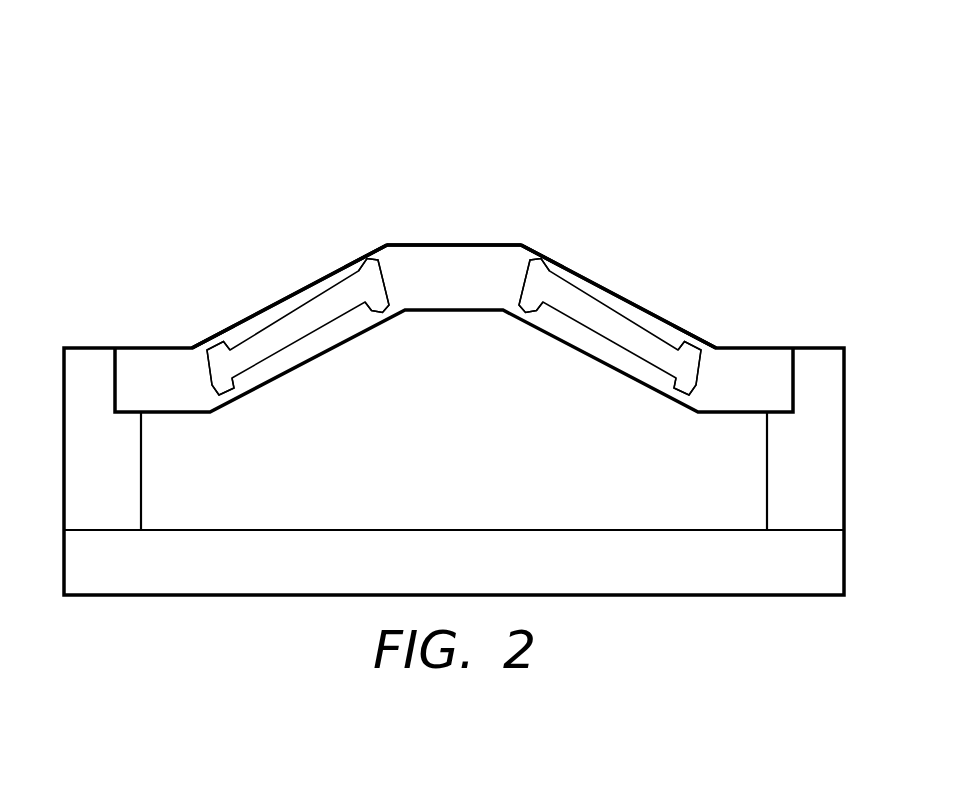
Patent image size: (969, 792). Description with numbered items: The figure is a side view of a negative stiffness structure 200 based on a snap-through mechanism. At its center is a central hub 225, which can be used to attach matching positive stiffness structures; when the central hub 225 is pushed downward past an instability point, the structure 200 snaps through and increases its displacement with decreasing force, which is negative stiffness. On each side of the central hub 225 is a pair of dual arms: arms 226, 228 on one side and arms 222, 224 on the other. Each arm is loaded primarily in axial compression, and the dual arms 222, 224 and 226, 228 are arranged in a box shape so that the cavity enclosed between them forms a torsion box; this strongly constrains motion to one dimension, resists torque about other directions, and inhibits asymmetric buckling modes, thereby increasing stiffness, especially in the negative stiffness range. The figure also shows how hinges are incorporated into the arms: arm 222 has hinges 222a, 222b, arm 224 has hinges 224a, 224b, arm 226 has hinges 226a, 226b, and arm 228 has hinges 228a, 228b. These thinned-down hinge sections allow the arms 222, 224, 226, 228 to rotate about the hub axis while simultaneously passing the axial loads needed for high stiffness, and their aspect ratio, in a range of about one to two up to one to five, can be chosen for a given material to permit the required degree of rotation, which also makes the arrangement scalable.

The negative stiffness structure 200 is at (310, 205).
The central hub 225 is at (451, 258).
The arm 226 is at (285, 299).
The hinge 226a is at (359, 258).
The hinge 226b is at (212, 340).
The arm 228 is at (317, 358).
The hinge 228a is at (383, 313).
The hinge 228b is at (233, 394).
The arm 222 is at (623, 299).
The hinge 222a is at (549, 258).
The hinge 222b is at (696, 340).
The arm 224 is at (591, 358).
The hinge 224a is at (525, 313).
The hinge 224b is at (675, 394).